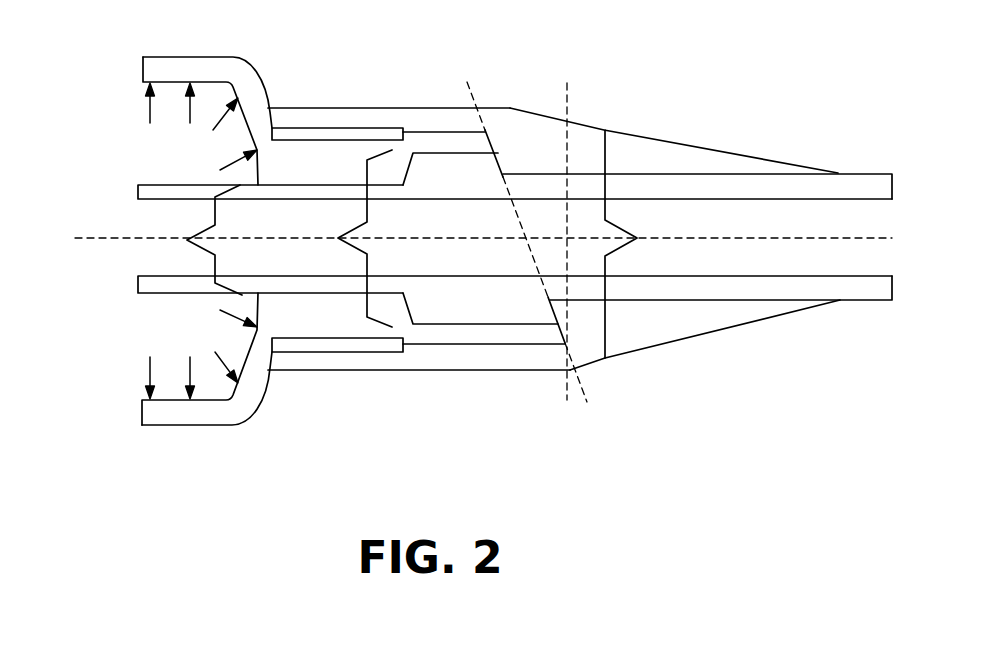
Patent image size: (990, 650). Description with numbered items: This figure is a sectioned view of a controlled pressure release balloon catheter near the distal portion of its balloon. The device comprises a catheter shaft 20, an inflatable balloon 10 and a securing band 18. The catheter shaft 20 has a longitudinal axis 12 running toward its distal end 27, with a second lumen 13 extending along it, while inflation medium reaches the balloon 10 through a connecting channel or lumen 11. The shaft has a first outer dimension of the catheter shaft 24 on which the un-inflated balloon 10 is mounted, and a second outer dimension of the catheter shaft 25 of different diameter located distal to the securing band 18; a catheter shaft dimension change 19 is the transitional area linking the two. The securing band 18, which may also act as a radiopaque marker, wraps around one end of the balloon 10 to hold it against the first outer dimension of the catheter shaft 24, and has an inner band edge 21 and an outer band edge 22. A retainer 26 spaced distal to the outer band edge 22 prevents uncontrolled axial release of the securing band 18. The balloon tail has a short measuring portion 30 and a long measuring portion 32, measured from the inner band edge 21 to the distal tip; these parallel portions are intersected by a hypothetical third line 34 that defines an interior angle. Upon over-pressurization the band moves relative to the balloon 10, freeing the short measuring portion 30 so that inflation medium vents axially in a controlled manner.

The inflatable balloon 10 is at (212, 65).
The connecting channel or lumen 11 is at (152, 152).
The longitudinal axis 12 is at (890, 246).
The second lumen 13 is at (893, 183).
The securing band 18 is at (348, 348).
The catheter shaft dimension change 19 is at (432, 320).
The catheter shaft 20 is at (138, 192).
The inner band edge 21 is at (275, 127).
The outer band edge 22 is at (405, 128).
The first outer dimension of the catheter shaft 24 is at (200, 240).
The second outer dimension of the catheter shaft 25 is at (350, 238).
The retainer 26 is at (635, 244).
The distal end of the catheter shaft 27 is at (630, 87).
The short measuring portion 30 is at (488, 130).
The long measuring portion 32 is at (562, 345).
The hypothetical third line 34 is at (519, 230).